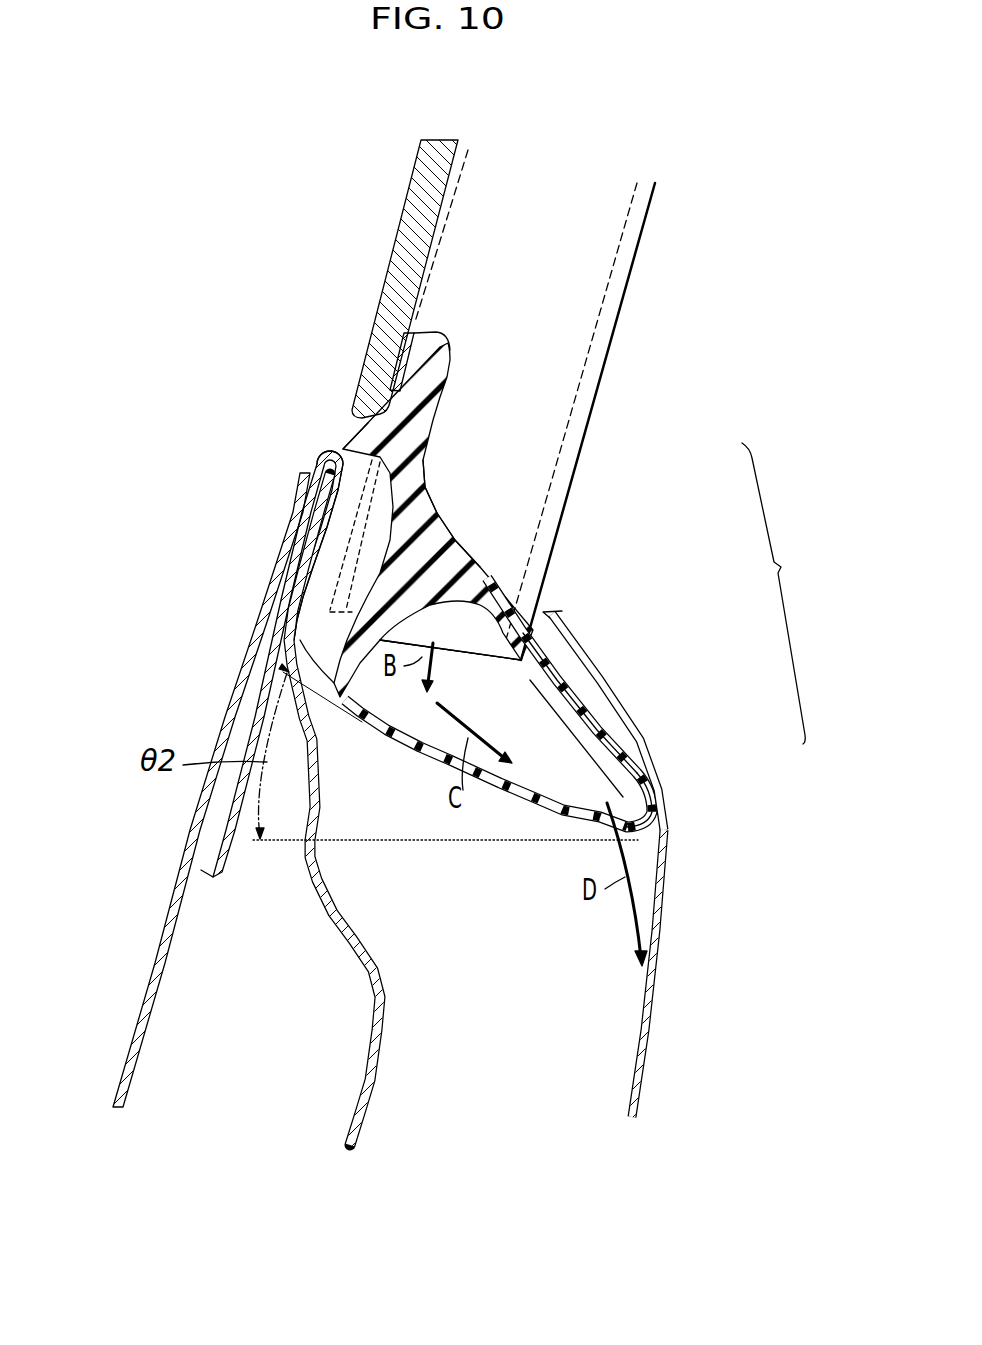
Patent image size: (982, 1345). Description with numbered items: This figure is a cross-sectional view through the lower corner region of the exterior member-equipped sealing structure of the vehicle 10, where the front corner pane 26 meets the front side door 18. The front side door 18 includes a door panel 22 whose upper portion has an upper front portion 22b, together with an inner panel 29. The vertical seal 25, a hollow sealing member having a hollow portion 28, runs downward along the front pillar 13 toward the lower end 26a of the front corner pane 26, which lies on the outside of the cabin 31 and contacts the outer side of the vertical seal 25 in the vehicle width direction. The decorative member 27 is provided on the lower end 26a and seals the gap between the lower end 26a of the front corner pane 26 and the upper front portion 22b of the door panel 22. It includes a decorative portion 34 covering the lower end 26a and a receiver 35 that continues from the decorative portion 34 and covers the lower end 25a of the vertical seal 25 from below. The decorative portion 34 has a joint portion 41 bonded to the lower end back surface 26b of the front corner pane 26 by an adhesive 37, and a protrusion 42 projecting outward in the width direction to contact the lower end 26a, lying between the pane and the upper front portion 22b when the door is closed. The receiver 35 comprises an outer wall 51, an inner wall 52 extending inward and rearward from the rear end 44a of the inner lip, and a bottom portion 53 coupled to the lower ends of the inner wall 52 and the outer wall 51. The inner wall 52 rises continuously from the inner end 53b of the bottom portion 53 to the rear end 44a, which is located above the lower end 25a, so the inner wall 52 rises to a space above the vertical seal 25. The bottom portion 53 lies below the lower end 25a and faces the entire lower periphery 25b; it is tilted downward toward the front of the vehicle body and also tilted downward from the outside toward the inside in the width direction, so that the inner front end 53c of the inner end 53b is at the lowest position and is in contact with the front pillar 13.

The vehicle 10 is at (350, 190).
The front pillar 13 is at (660, 953).
The front side door 18 is at (190, 821).
The door panel 22 is at (240, 721).
The upper front portion 22b is at (311, 486).
The vertical seal 25 is at (633, 230).
The lower end 25a is at (543, 592).
The lower periphery 25b is at (488, 650).
The front corner pane 26 is at (393, 262).
The lower end 26a is at (408, 356).
The lower end back surface 26b is at (400, 310).
The decorative member 27 is at (774, 593).
The hollow portion 28 is at (597, 328).
The inner panel 29 is at (347, 920).
The cabin 31 is at (797, 834).
The decorative portion 34 is at (445, 506).
The receiver 35 is at (607, 725).
The adhesive 37 is at (442, 343).
The joint portion 41 is at (432, 382).
The protrusion 42 is at (338, 440).
The rear end 44a is at (475, 560).
The outer wall 51 is at (390, 550).
The inner wall 52 is at (578, 697).
The bottom portion 53 is at (437, 752).
The inner end 53b is at (582, 748).
The inner front end 53c is at (637, 812).